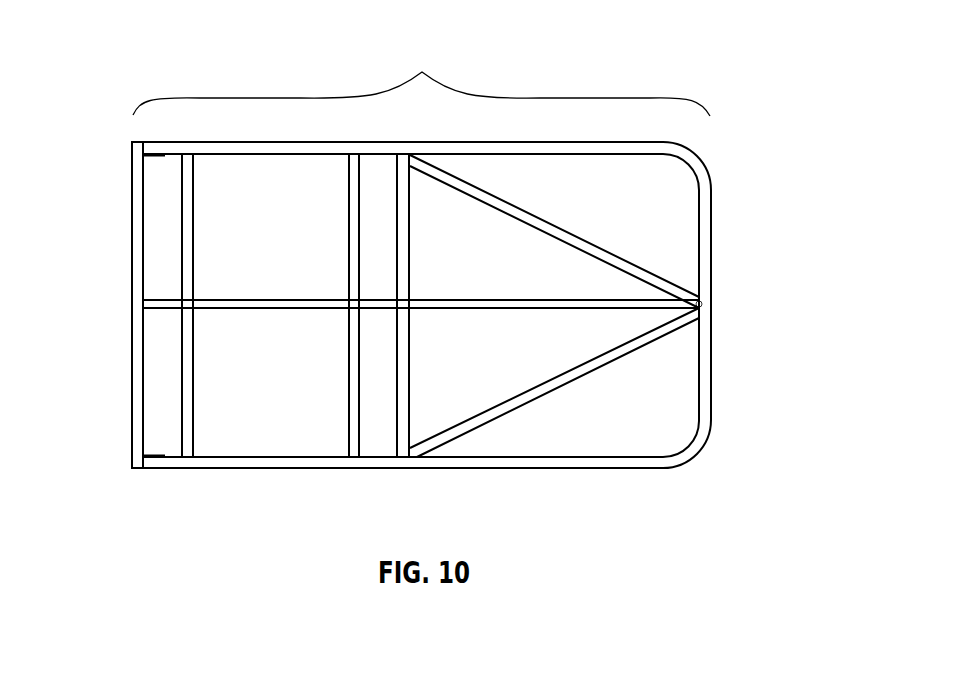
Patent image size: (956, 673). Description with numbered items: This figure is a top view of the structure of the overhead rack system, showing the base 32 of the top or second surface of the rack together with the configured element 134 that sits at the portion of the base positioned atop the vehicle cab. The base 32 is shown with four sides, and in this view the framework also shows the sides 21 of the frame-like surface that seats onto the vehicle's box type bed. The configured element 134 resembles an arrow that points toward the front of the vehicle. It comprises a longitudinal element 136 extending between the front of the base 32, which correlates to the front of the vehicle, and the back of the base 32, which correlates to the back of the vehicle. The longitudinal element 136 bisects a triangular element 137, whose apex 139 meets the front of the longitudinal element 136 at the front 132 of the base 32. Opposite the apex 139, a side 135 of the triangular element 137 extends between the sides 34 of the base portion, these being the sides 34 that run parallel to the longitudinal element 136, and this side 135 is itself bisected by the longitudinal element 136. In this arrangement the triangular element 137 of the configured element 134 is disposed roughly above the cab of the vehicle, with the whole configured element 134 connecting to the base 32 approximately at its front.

The base 32 is at (436, 237).
The sides of the base portion 34 is at (132, 243).
The sides 21 is at (193, 241).
The front of the base 132 is at (742, 280).
The configured element 134 is at (422, 72).
The side of the triangular element 135 is at (411, 262).
The longitudinal element 136 is at (255, 310).
The triangular element 137 is at (582, 380).
The apex of the triangular element 139 is at (713, 303).